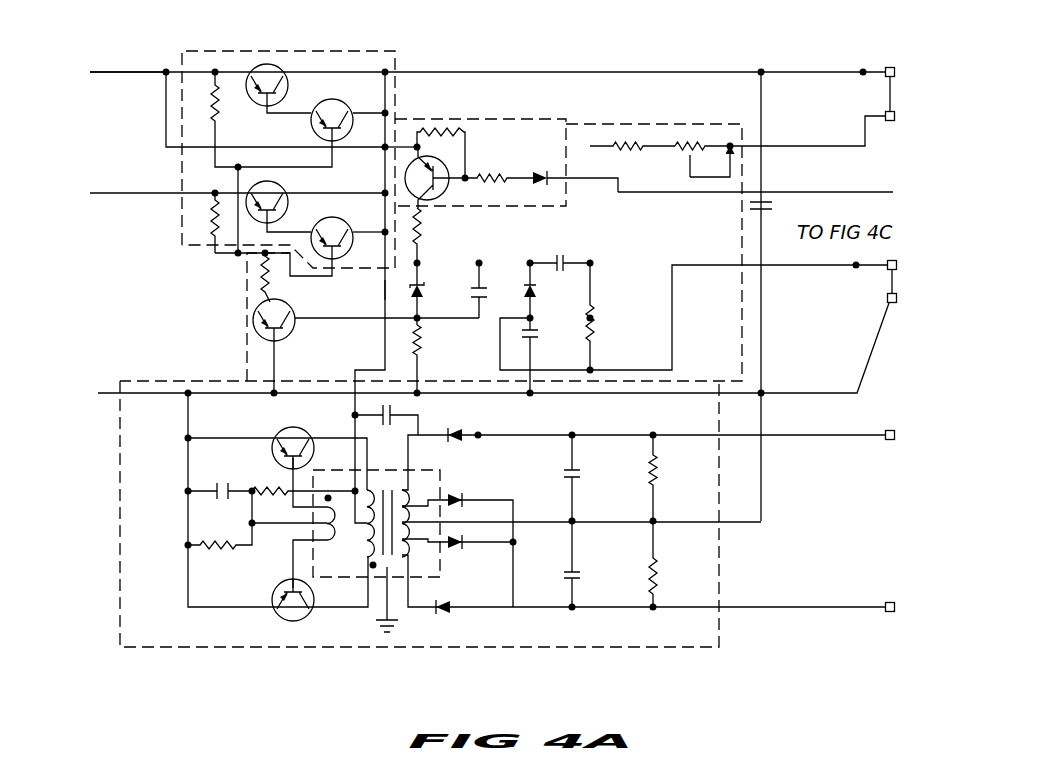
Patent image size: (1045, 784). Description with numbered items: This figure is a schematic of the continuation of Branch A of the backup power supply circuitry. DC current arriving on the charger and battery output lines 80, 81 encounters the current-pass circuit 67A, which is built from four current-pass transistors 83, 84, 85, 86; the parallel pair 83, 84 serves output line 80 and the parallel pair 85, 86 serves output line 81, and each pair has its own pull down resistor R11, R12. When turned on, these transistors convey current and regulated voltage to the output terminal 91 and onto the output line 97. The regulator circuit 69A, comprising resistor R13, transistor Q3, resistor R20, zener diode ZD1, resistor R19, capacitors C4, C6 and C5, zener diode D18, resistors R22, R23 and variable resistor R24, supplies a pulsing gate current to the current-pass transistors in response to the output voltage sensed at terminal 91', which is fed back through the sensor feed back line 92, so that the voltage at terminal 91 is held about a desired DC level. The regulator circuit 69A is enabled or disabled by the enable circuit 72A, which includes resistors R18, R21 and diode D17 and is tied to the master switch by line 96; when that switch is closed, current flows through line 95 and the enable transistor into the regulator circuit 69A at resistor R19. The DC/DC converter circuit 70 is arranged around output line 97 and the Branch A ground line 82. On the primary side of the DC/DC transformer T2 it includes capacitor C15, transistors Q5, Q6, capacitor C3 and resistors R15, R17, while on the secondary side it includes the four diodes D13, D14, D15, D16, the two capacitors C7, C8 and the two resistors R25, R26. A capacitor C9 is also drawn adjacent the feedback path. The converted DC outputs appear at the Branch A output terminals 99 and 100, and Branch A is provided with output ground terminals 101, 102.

The current-pass circuit 67A is at (281, 50).
The regulator circuit 69A is at (245, 338).
The DC/DC converter circuit 70 is at (116, 512).
The enable circuit 72A is at (468, 118).
The output line 80 is at (128, 74).
The output line 81 is at (128, 194).
The Branch A ground line 82 is at (104, 392).
The current-pass transistor 83 is at (290, 86).
The current-pass transistor 84 is at (312, 127).
The current-pass transistor 85 is at (300, 196).
The current-pass transistor 86 is at (335, 226).
The output terminal 91 is at (890, 76).
The output terminal 91' is at (890, 132).
The sensor feed back line 92 is at (782, 146).
The line 95 is at (165, 118).
The line 96 is at (803, 192).
The output line 97 is at (383, 290).
The output terminal 99 is at (892, 421).
The output terminal 100 is at (886, 619).
The output ground terminal 101 is at (892, 266).
The output ground terminal 102 is at (876, 304).
The pull down resistor R11 is at (271, 119).
The pull down resistor R12 is at (210, 228).
The resistor R13 is at (262, 285).
The resistor R15 is at (220, 520).
The resistor R17 is at (303, 481).
The resistor R18 is at (438, 130).
The resistor R19 is at (439, 235).
The resistor R20 is at (440, 359).
The resistor R21 is at (499, 165).
The resistor R22 is at (632, 158).
The resistor R23 is at (613, 316).
The variable resistor R24 is at (716, 147).
The resistor R25 is at (674, 478).
The resistor R26 is at (674, 564).
The capacitor C3 is at (220, 477).
The capacitor C4 is at (491, 290).
The capacitor C5 is at (560, 252).
The capacitor C6 is at (545, 355).
The capacitor C7 is at (583, 478).
The capacitor C8 is at (583, 564).
The capacitor C9 is at (773, 206).
The capacitor C15 is at (386, 415).
The diode D13 is at (460, 424).
The diode D14 is at (466, 488).
The diode D15 is at (466, 553).
The diode D16 is at (451, 617).
The diode D17 is at (568, 170).
The zener diode D18 is at (551, 290).
The zener diode ZD1 is at (438, 294).
The transistor Q3 is at (296, 336).
The transistor Q5 is at (292, 428).
The transistor Q6 is at (293, 611).
The DC/DC transformer T2 is at (378, 586).